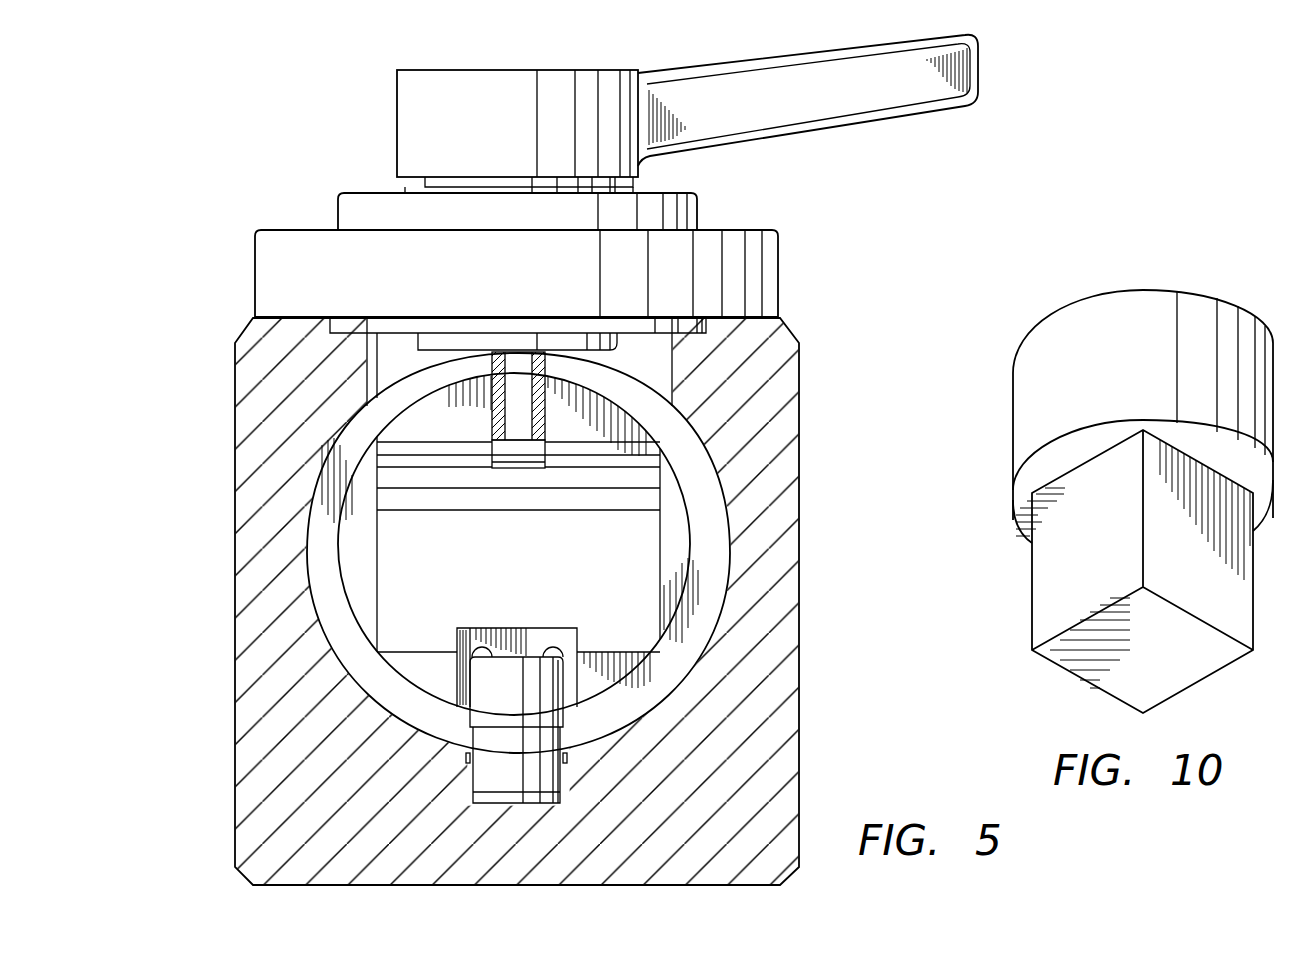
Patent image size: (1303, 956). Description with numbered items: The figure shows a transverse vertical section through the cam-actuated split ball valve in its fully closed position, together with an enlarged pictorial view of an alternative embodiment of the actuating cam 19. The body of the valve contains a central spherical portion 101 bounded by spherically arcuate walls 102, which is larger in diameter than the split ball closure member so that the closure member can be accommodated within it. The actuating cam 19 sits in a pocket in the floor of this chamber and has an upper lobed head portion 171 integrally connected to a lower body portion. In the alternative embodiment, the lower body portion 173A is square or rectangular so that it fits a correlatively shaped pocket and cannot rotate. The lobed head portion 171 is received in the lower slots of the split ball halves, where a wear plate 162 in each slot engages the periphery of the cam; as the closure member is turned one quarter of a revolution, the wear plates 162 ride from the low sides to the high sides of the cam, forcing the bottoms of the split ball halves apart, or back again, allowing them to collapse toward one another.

In FIG. 5, the actuating cam 19 is at (511, 645).
In FIG. 10, the actuating cam 19 is at (1112, 471).
In FIG. 5, the central spherical portion 101 is at (311, 568).
In FIG. 5, the spherically arcuate walls 102 is at (328, 603).
In FIG. 5, the wear plate 162 is at (548, 638).
In FIG. 10, the upper lobed head portion 171 is at (1012, 407).
In FIG. 10, the lower body portion 173A is at (1031, 589).